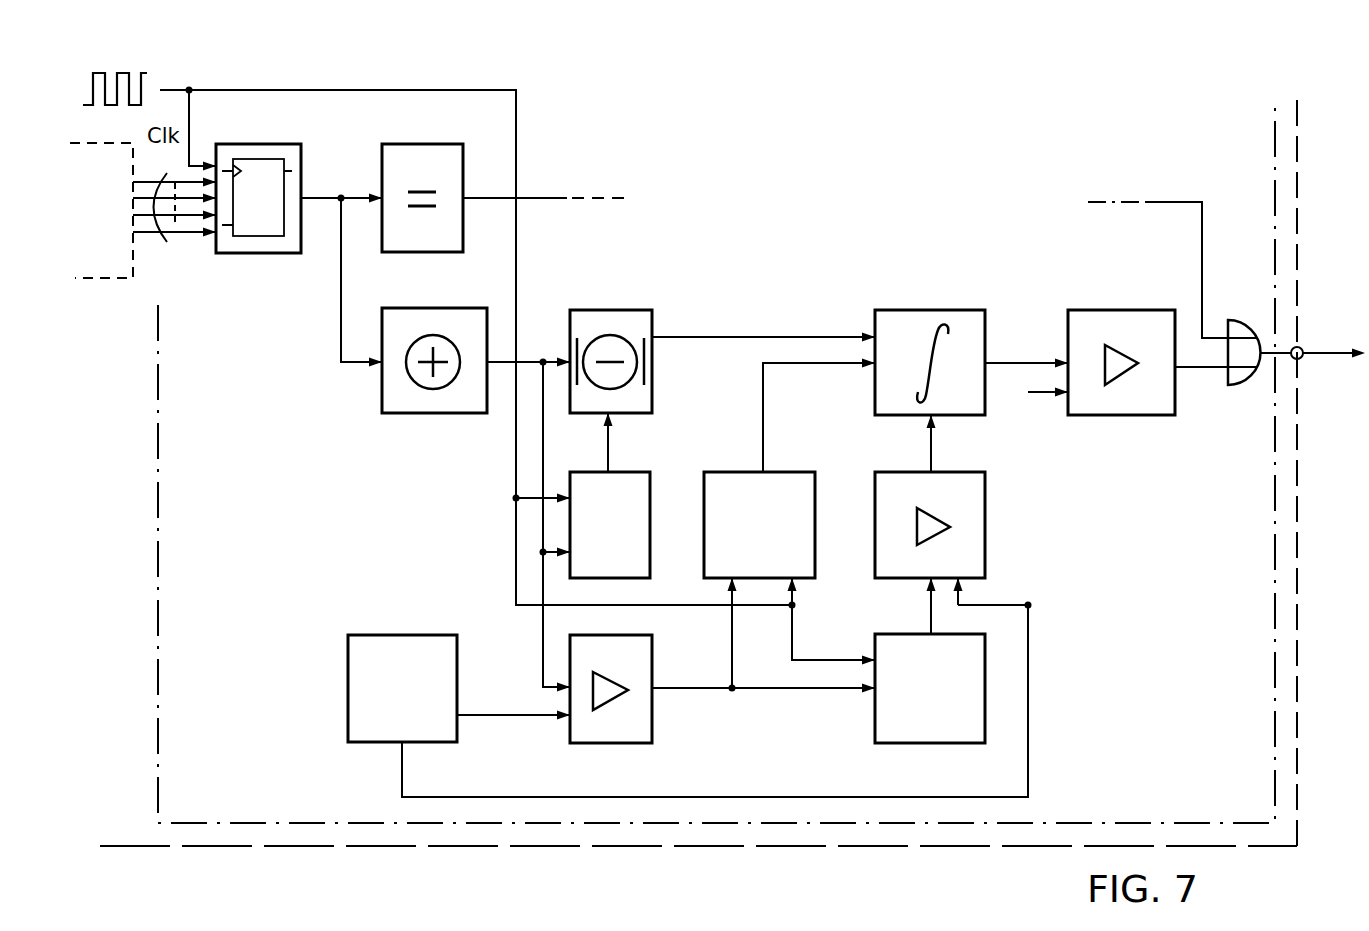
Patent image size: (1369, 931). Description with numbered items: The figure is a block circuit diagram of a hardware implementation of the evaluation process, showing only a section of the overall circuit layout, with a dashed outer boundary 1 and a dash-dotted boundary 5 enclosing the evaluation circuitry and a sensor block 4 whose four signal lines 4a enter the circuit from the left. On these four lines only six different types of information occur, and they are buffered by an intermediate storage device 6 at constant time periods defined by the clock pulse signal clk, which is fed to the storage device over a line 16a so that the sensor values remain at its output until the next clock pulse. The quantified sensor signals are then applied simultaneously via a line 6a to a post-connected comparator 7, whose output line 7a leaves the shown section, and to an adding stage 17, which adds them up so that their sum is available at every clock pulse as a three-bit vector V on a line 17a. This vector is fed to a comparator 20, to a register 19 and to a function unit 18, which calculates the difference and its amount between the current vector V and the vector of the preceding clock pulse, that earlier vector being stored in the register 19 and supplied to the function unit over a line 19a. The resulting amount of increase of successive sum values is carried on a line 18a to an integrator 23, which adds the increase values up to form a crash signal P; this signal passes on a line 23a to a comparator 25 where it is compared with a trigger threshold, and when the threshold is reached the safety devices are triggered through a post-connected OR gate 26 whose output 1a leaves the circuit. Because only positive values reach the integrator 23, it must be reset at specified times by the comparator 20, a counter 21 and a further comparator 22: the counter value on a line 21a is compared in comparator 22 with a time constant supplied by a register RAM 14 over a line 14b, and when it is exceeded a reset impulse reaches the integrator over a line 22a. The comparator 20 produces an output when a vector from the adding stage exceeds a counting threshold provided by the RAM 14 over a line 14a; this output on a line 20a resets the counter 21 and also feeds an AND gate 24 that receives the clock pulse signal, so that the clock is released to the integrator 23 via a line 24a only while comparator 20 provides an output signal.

The apparatus boundary 1 is at (781, 848).
The output signal terminal 1a is at (1303, 345).
The sensor / input unit 4 is at (86, 280).
The input signal lines 4a is at (167, 245).
The evaluation circuit boundary 5 is at (540, 830).
The intermediate storage device 6 is at (235, 255).
The line 6a is at (325, 198).
The comparator 7 is at (412, 252).
The comparator output line 7a is at (487, 200).
The register RAM 14 is at (395, 635).
The line 14a is at (487, 712).
The line 14b is at (470, 797).
The line 16a is at (521, 100).
The adding stage 17 is at (400, 413).
The line 17a is at (538, 357).
The function unit 18 is at (611, 310).
The line 18a is at (714, 333).
The register 19 is at (627, 470).
The line 19a is at (617, 428).
The comparator 20 is at (622, 743).
The line 20a is at (712, 692).
The counter 21 is at (910, 745).
The line 21a is at (925, 614).
The further comparator 22 is at (868, 488).
The line 22a is at (935, 445).
The integrator 23 is at (934, 310).
The integrator output line 23a is at (1022, 358).
The AND gate 24 is at (727, 472).
The AND gate output line 24a is at (763, 397).
The comparator 25 is at (1105, 310).
The OR gate 26 is at (1240, 386).